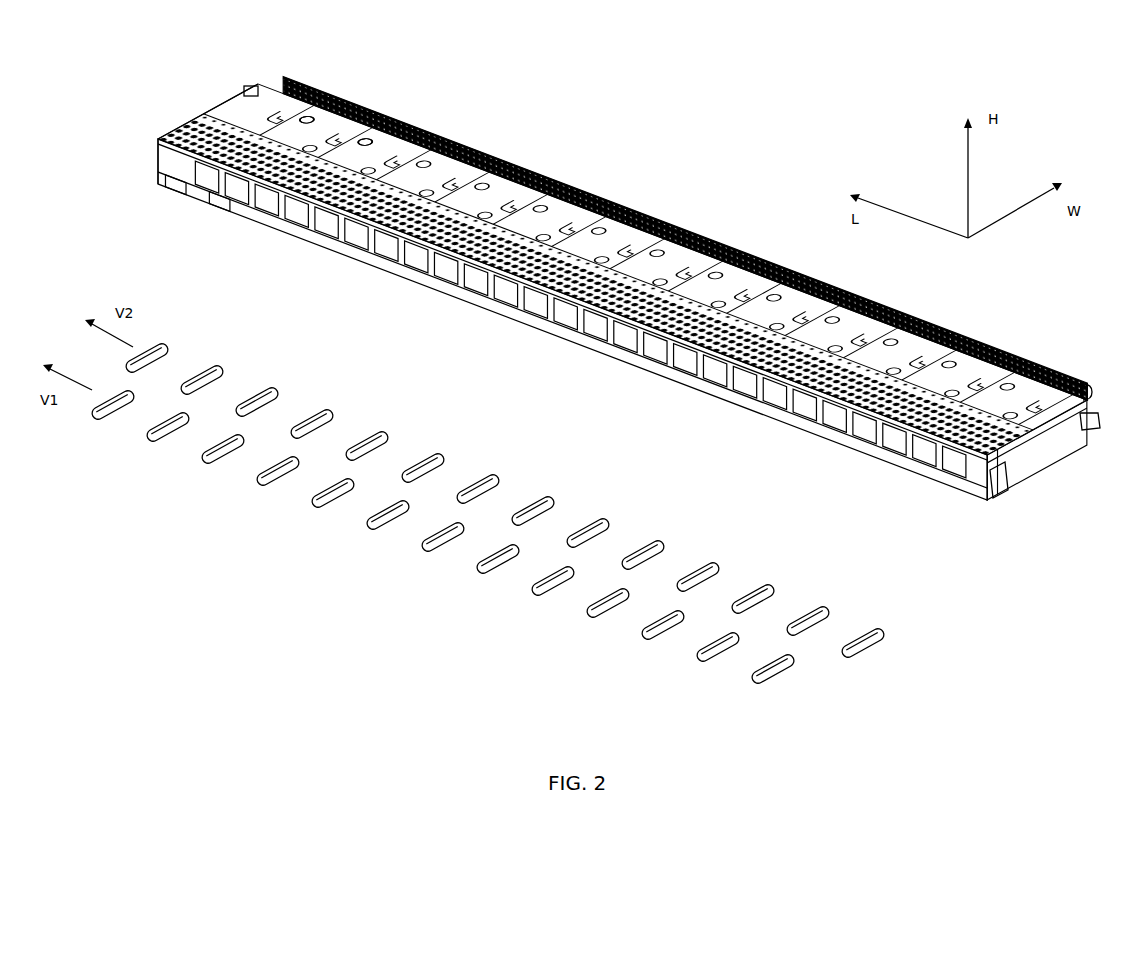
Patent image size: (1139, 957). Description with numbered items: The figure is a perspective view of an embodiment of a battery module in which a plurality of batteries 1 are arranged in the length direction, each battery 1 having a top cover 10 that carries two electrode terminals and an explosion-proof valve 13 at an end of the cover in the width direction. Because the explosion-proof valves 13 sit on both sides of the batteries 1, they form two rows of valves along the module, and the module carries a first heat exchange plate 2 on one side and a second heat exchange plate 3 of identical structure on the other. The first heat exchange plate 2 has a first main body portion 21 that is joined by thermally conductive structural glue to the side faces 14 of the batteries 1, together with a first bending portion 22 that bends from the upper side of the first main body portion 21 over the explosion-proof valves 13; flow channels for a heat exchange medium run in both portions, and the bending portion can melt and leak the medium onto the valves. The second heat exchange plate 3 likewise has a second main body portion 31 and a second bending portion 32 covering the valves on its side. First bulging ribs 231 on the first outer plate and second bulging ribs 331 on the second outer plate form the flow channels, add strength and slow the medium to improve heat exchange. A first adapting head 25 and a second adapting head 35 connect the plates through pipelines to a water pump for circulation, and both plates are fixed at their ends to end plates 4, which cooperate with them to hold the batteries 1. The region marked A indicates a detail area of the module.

The battery 1 is at (618, 270).
The first heat exchange plate 2 is at (569, 312).
The second heat exchange plate 3 is at (707, 239).
The end plate 4 is at (241, 90).
The top cover 10 is at (622, 264).
The explosion-proof valve 13 is at (188, 195).
The side face 14 is at (227, 201).
The first main body portion 21 is at (285, 215).
The first bending portion 22 is at (361, 236).
The first bulging rib 231 is at (381, 275).
The first adapting head 25 is at (1017, 472).
The second main body portion 31 is at (1095, 400).
The second bending portion 32 is at (409, 122).
The second bulging rib 331 is at (507, 160).
The second adapting head 35 is at (248, 92).
The region A is at (372, 107).